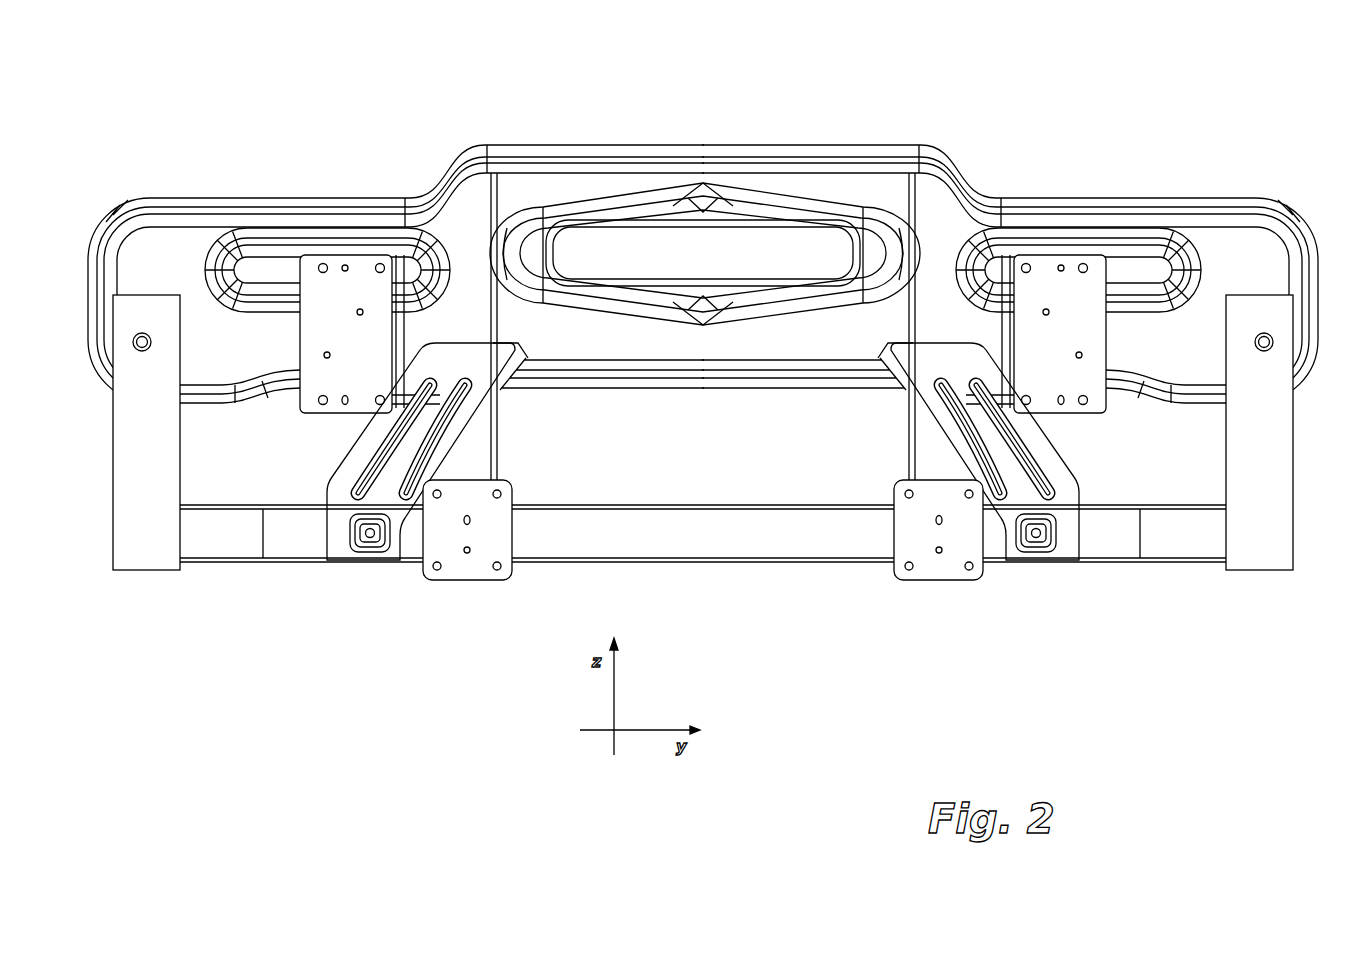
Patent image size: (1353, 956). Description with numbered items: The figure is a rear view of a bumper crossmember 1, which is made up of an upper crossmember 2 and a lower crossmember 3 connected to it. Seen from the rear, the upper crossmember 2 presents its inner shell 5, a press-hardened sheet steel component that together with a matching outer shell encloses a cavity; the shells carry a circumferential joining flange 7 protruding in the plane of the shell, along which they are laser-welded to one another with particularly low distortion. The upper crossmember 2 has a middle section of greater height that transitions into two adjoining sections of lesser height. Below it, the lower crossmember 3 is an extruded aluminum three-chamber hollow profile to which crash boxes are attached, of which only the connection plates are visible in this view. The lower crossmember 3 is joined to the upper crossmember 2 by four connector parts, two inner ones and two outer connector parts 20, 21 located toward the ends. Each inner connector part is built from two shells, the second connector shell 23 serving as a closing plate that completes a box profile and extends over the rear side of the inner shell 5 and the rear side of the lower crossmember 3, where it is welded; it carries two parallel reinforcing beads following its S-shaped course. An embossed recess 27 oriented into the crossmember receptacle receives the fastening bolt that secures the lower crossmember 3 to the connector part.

The bumper crossmember 1 is at (879, 268).
The upper crossmember 2 is at (122, 190).
The lower crossmember 3 is at (243, 537).
The inner shell 5 is at (580, 348).
The joining flange 7 is at (205, 208).
The outer connector part 20 is at (1278, 507).
The outer connector part 21 is at (162, 484).
The second connector shell 23 is at (457, 430).
The embossed recess 27 is at (365, 552).